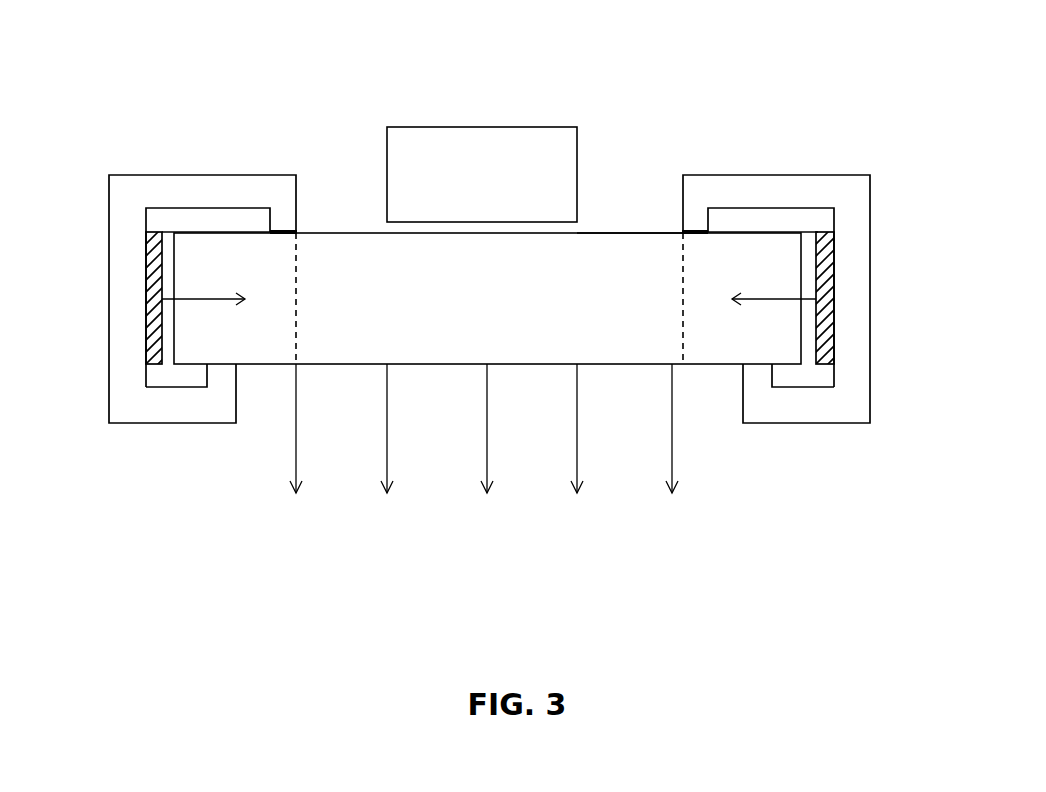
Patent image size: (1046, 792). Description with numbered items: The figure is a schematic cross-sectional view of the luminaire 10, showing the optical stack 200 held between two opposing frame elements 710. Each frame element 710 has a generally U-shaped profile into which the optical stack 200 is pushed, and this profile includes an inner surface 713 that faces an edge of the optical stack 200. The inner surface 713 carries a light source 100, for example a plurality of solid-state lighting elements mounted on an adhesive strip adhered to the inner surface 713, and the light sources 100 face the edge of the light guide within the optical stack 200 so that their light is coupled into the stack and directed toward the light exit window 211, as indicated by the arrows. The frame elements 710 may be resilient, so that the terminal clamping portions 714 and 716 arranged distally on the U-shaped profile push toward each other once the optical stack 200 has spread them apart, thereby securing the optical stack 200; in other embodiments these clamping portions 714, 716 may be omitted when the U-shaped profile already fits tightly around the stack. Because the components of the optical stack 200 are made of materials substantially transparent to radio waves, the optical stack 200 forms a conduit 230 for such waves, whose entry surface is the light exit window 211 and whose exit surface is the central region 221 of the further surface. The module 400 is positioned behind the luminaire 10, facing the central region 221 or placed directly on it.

The luminaire 10 is at (502, 636).
The light source 100 is at (147, 298).
The optical stack 200 is at (453, 363).
The light exit window 211 is at (630, 365).
The central region 221 is at (624, 232).
The conduit 230 is at (338, 250).
The module 400 is at (492, 150).
The frame element 710 is at (165, 422).
The inner surface 713 is at (146, 218).
The clamping portion 714 is at (283, 232).
The clamping portion 716 is at (214, 365).